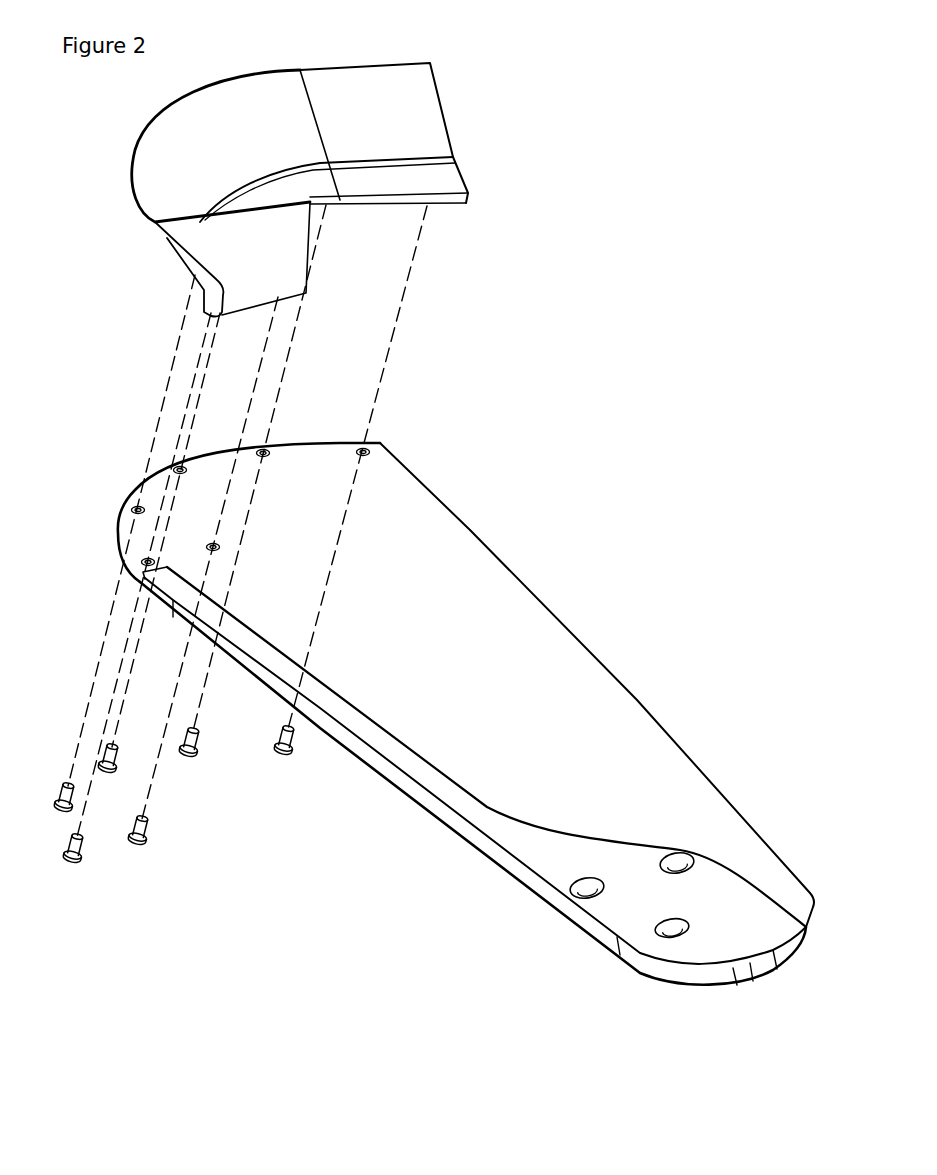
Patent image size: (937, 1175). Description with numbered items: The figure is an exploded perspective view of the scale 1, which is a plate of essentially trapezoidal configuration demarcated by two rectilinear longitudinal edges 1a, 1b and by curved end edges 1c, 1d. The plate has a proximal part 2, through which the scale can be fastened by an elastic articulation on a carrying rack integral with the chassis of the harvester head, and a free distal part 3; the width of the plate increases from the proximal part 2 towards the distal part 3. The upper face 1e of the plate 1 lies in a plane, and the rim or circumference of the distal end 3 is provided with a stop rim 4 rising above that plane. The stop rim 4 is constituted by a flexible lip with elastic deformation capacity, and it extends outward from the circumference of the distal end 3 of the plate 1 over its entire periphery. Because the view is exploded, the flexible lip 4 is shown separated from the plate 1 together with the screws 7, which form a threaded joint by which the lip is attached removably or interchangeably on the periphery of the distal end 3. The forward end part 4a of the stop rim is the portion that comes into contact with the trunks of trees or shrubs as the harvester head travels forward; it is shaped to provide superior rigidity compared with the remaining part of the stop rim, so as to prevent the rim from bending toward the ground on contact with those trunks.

The scale 1 is at (510, 660).
The rectilinear longitudinal edge 1a is at (388, 773).
The rectilinear longitudinal edge 1b is at (487, 550).
The curved end edge 1c is at (780, 957).
The curved end edge 1d is at (160, 465).
The upper face 1e is at (623, 780).
The proximal part 2 is at (690, 1007).
The free distal part 3 is at (132, 359).
The stop rim 4 is at (377, 110).
The forward end part of the stop rim 4a is at (183, 248).
The screws 7 is at (137, 847).